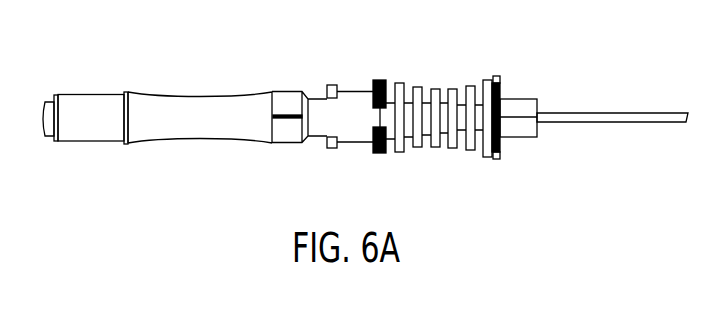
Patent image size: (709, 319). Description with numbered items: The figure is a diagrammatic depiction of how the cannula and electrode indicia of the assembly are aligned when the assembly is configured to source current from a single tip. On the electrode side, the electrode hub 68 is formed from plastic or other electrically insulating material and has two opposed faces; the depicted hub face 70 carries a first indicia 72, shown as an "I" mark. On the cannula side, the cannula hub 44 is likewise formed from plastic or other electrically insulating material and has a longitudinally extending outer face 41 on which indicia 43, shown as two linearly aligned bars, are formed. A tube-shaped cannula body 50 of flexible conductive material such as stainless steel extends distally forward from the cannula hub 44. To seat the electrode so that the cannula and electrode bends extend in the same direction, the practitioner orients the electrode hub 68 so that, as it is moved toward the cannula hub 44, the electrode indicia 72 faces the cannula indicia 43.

The electrode hub 68 is at (188, 130).
The hub face 70 is at (282, 98).
The first indicia 72 is at (287, 123).
The outer face 41 is at (347, 132).
The indicia 43 is at (373, 90).
The cannula hub 44 is at (433, 92).
The cannula body 50 is at (593, 113).